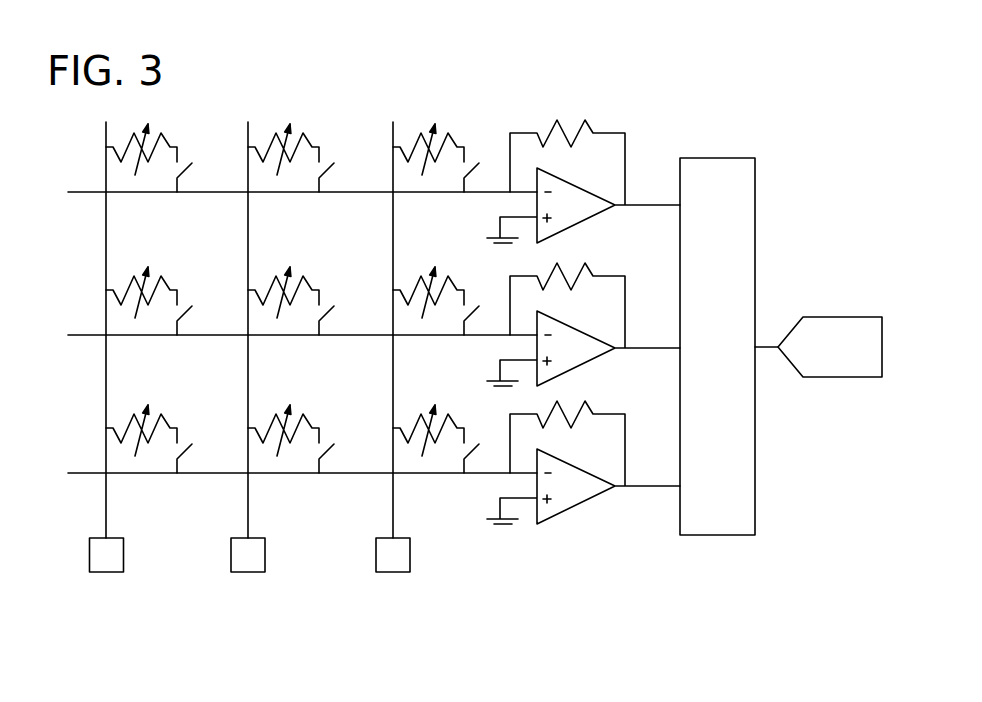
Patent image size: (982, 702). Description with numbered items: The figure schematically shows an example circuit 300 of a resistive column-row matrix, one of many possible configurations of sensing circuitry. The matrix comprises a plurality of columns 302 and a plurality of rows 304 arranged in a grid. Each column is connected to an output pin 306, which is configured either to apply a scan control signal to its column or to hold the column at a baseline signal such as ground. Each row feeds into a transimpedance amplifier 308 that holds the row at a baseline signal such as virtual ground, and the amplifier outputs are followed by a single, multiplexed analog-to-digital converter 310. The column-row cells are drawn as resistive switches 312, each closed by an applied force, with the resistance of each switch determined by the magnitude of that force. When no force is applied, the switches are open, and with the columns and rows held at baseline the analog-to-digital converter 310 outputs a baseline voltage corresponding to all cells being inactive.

The example circuit 300 is at (398, 72).
The columns 302 is at (250, 108).
The rows 304 is at (77, 348).
The output pins 306 is at (273, 598).
The transimpedance amplifiers 308 is at (565, 530).
The multiplexed analog-to-digital converter 310 is at (792, 418).
The resistive switches 312 is at (307, 262).